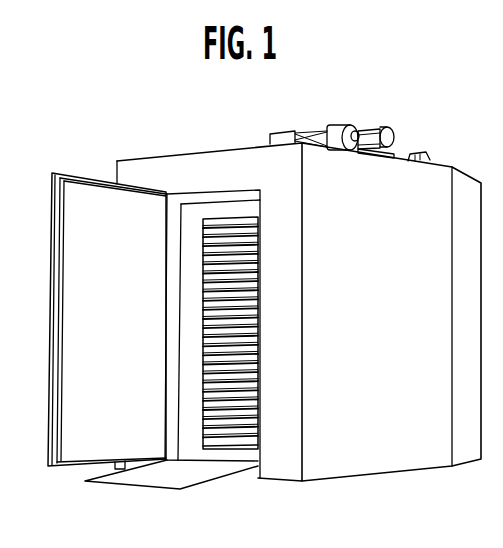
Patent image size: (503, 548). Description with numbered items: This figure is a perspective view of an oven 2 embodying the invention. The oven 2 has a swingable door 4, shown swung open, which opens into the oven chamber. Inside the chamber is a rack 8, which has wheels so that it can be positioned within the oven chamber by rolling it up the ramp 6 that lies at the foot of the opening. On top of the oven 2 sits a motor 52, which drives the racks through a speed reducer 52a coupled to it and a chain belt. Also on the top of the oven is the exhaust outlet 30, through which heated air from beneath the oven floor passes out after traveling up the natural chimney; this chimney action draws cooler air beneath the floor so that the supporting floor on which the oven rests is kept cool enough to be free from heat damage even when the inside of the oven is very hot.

The oven 2 is at (365, 270).
The swingable door 4 is at (115, 359).
The ramp 6 is at (192, 471).
The rack 8 is at (249, 369).
The exhaust outlet 30 is at (432, 157).
The motor 52 is at (339, 124).
The speed reducer 52a is at (383, 128).